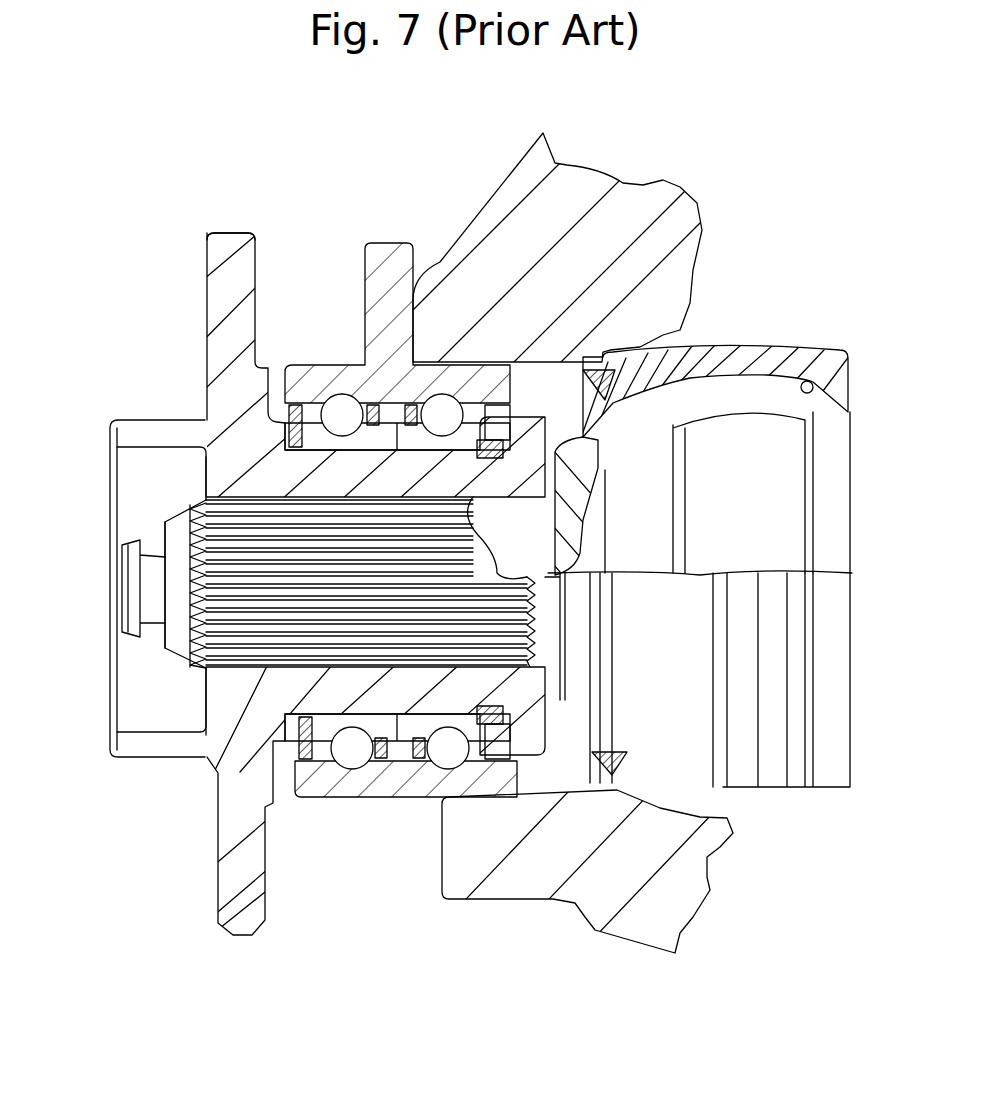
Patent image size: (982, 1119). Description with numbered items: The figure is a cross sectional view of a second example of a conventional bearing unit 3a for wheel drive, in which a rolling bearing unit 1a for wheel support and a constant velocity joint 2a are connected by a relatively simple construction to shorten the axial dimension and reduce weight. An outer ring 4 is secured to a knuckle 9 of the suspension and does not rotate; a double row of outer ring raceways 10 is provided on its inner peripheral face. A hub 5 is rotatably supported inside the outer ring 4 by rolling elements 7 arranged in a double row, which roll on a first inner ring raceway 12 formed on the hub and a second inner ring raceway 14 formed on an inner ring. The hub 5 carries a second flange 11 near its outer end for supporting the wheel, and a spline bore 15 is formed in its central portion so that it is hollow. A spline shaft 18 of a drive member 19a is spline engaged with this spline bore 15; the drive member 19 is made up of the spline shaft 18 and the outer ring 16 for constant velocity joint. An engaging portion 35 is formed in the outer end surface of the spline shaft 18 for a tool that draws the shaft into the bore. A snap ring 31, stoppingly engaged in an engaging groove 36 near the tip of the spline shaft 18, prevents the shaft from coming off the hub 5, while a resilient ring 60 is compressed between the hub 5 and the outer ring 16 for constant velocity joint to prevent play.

The rolling bearing unit for wheel support 1a is at (266, 272).
The constant velocity joint 2a is at (735, 294).
The bearing unit for wheel drive 3a is at (362, 212).
The outer ring 4 is at (390, 800).
The hub 5 is at (216, 313).
The rolling elements 7 is at (350, 410).
The knuckle 9 is at (657, 251).
The outer ring raceways 10 is at (349, 768).
The second flange 11 is at (216, 256).
The first inner ring raceway 12 is at (338, 410).
The second inner ring raceway 14 is at (446, 400).
The spline bore 15 is at (300, 652).
The outer ring for constant velocity joint 16 is at (773, 365).
The spline shaft 18 is at (196, 672).
The drive member 19 is at (814, 385).
The drive member 19a is at (592, 628).
The snap ring 31 is at (205, 500).
The engaging portion 35 is at (155, 557).
The engaging groove 36 is at (150, 583).
The resilient ring 60 is at (580, 626).